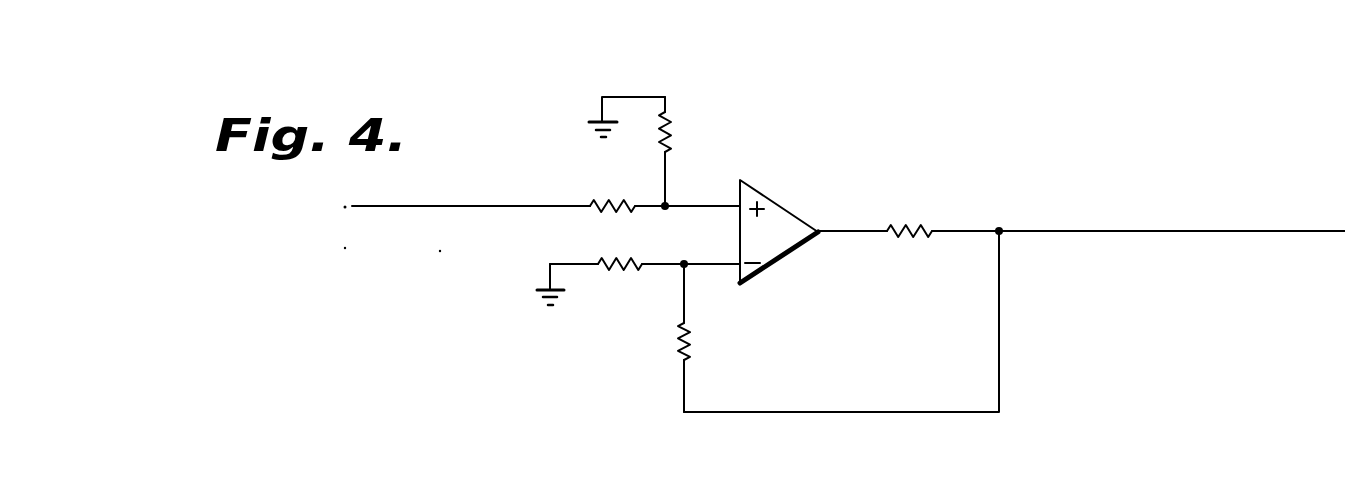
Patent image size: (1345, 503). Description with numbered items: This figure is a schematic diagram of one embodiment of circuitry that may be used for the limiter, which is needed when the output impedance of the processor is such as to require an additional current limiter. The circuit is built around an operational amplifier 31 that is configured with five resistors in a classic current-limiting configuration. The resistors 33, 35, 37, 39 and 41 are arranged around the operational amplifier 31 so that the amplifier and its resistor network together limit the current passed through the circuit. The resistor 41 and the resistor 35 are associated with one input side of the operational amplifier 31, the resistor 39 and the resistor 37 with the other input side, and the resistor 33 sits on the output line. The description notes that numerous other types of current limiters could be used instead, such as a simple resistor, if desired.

The operational amplifier 31 is at (790, 216).
The resistor 33 is at (915, 220).
The resistor 35 is at (675, 121).
The resistor 37 is at (692, 352).
The resistor 39 is at (622, 272).
The resistor 41 is at (605, 200).